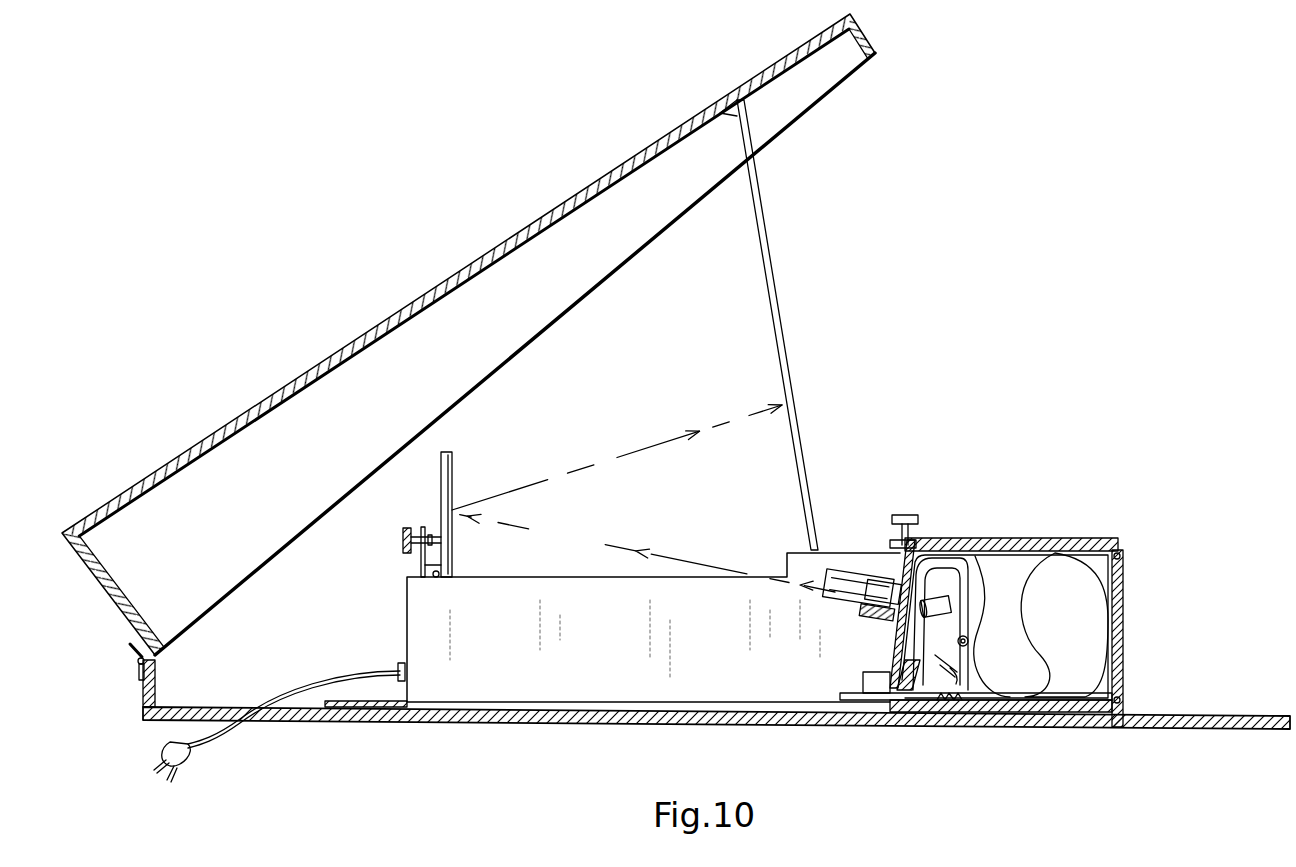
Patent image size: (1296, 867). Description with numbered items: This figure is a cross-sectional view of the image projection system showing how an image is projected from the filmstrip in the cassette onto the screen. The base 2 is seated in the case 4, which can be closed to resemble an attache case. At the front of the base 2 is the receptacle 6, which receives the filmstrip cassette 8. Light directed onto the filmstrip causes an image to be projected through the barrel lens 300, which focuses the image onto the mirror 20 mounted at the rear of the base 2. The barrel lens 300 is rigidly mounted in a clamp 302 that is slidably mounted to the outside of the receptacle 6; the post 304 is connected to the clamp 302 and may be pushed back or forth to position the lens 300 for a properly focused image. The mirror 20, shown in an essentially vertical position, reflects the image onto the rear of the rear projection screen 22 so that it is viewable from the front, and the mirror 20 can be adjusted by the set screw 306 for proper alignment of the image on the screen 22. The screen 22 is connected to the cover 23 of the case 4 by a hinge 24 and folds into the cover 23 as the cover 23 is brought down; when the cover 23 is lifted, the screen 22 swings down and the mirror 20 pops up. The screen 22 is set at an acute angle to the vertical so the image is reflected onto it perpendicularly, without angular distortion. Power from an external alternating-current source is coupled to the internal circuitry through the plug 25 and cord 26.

The base 2 is at (348, 705).
The case 4 is at (357, 712).
The receptacle 6 is at (1075, 540).
The filmstrip cassette 8 is at (1123, 562).
The mirror 20 is at (448, 452).
The rear projection screen 22 is at (773, 268).
The cover 23 is at (318, 362).
The hinge 24 is at (428, 580).
The plug 25 is at (180, 768).
The cord 26 is at (206, 730).
The barrel lens 300 is at (852, 587).
The clamp 302 is at (878, 612).
The post 304 is at (910, 517).
The set screw 306 is at (403, 541).